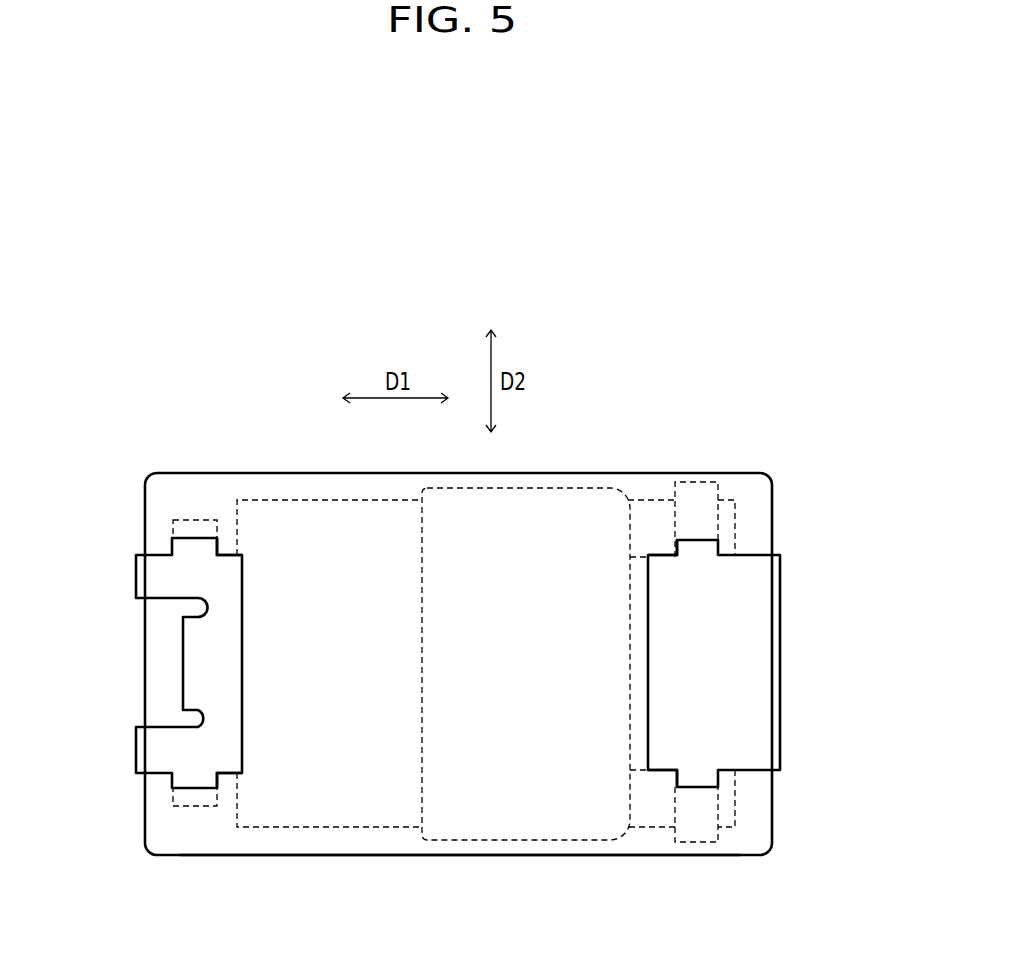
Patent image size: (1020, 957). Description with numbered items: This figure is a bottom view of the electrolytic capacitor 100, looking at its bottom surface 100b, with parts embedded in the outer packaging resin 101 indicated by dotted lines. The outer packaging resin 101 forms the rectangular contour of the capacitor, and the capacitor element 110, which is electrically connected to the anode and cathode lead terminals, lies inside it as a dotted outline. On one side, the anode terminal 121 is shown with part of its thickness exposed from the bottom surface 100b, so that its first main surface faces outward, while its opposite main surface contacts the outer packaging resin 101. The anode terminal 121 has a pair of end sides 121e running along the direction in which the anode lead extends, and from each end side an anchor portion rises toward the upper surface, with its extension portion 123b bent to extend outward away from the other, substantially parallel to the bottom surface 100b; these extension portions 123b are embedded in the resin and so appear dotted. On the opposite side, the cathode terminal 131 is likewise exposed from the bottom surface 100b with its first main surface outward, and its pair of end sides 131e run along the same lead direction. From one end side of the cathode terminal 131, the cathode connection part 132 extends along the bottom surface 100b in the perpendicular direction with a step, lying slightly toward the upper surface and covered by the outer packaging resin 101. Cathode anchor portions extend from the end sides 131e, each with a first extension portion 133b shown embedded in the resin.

The electrolytic capacitor 100 is at (461, 623).
The bottom surface 100b is at (372, 837).
The outer packaging resin 101 is at (768, 492).
The capacitor element 110 is at (320, 500).
The anode terminal 121 is at (163, 583).
The end sides 121e is at (227, 552).
The extension portion 123b is at (184, 520).
The cathode terminal 131 is at (765, 665).
The end sides 131e is at (656, 552).
The cathode connection part 132 is at (540, 487).
The first extension portion 133b is at (740, 522).